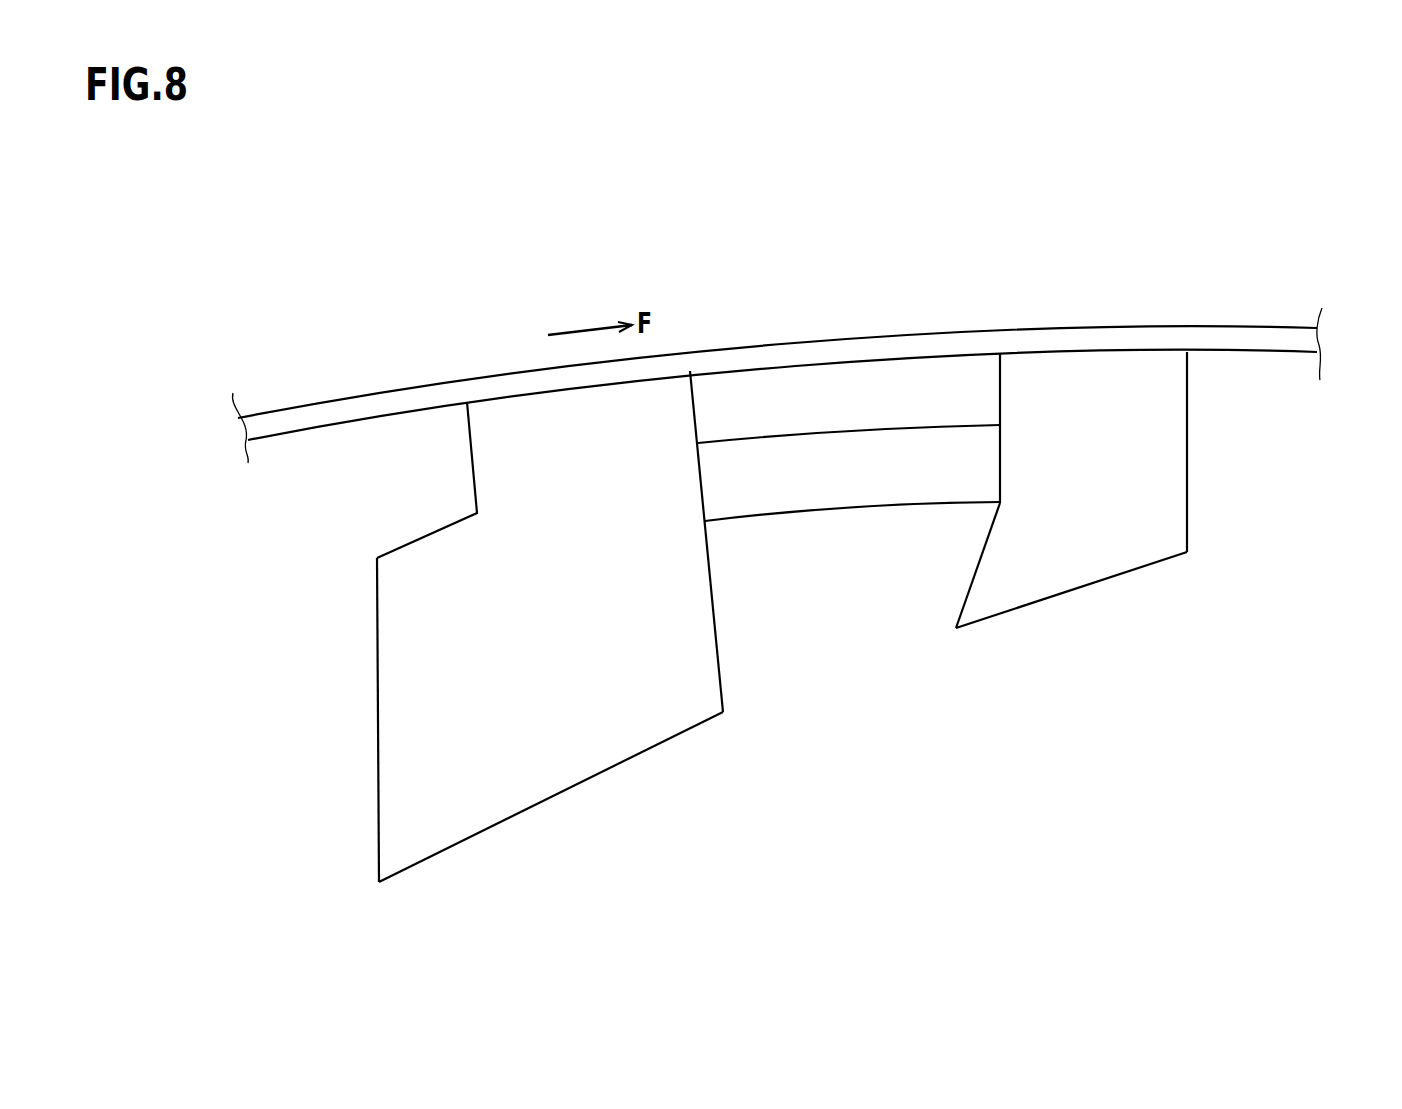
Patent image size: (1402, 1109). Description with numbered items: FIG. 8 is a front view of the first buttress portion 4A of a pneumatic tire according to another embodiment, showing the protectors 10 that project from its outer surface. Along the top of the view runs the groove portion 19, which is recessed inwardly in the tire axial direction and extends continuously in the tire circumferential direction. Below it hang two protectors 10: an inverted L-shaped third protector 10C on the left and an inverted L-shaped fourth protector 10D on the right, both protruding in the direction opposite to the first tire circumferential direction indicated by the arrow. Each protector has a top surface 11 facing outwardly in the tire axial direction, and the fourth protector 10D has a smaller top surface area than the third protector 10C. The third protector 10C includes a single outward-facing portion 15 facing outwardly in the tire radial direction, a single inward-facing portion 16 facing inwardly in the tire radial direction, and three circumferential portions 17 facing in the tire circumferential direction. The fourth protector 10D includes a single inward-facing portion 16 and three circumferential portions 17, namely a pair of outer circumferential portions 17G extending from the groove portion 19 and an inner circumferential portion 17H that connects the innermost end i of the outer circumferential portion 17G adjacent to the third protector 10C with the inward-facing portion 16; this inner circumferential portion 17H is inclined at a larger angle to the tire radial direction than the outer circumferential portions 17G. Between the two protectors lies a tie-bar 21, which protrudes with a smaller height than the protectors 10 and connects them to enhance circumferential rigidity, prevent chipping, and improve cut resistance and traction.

The first buttress portion 4A is at (1248, 260).
The groove portion 19 is at (1262, 342).
The top surface 11 is at (1090, 377).
The outer circumferential portion 17G is at (998, 385).
The circumferential portion 17 is at (1202, 480).
The inner circumferential portion 17H is at (975, 565).
The innermost end i is at (1000, 503).
The inward-facing portion 16 is at (590, 775).
The fourth protector 10D is at (1113, 582).
The third protector 10C is at (442, 863).
The tie-bar 21 is at (852, 472).
The outward-facing portion 15 is at (428, 532).
The protector 10 is at (318, 583).